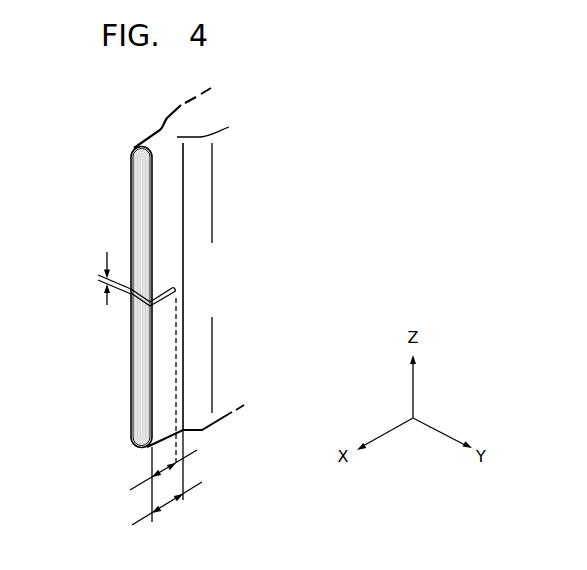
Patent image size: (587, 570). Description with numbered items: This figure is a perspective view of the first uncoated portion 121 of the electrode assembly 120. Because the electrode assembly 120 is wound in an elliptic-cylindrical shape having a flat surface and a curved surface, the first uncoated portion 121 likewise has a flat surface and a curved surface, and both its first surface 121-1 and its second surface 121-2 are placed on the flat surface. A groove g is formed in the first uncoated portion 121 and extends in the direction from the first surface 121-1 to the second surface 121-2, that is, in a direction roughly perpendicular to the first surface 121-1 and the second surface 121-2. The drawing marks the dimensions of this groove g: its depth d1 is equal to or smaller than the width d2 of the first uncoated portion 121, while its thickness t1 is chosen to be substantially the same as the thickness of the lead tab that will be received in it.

The electrode assembly 120 is at (176, 123).
The first uncoated portion 121 is at (98, 297).
The first surface 121-1 is at (131, 396).
The second surface 121-2 is at (152, 421).
The groove g is at (133, 311).
The thickness of the groove t1 is at (107, 278).
The depth of the groove d1 is at (157, 484).
The width of the first uncoated portion d2 is at (167, 479).